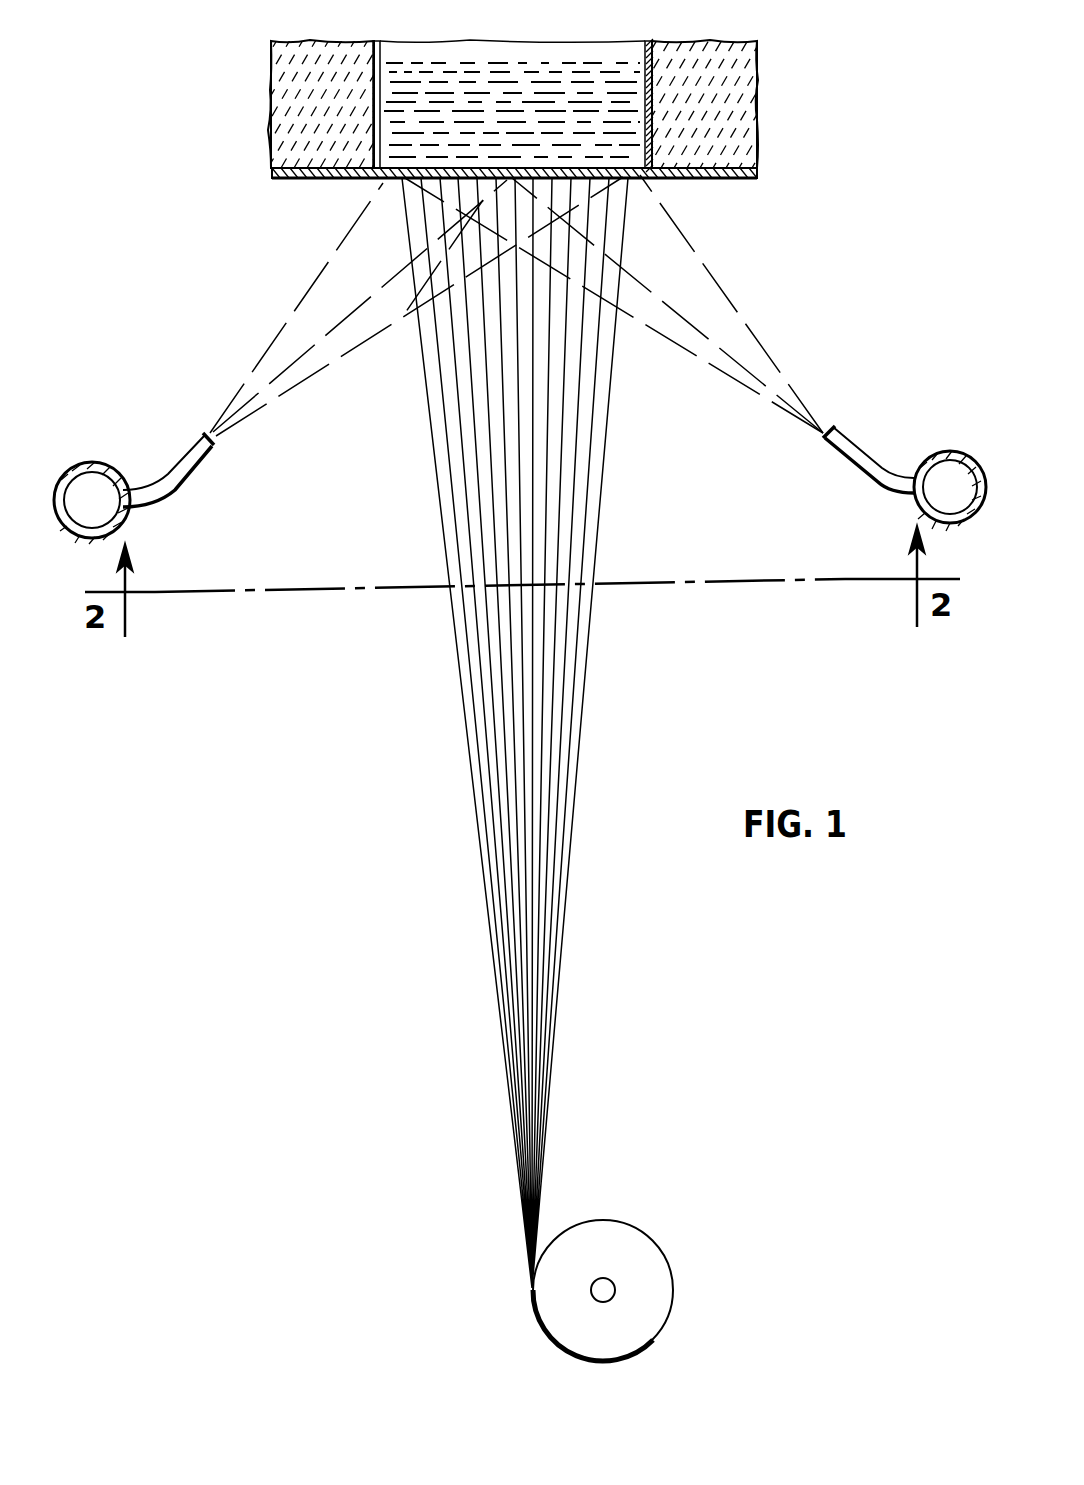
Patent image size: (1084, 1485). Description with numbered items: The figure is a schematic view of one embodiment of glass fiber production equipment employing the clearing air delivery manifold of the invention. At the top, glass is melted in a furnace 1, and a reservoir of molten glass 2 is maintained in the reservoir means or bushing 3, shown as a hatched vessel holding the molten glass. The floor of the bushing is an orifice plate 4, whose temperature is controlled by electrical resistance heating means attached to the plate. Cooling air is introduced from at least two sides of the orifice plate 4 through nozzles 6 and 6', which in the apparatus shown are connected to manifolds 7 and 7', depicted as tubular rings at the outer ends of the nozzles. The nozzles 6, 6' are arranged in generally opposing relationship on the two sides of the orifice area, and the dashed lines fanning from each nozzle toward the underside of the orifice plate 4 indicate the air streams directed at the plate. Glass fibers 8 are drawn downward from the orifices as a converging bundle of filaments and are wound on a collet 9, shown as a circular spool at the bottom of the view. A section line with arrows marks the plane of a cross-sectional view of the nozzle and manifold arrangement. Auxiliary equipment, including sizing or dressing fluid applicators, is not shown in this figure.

The furnace 1 is at (297, 75).
The molten glass 2 is at (480, 72).
The bushing 3 is at (640, 52).
The orifice plate 4 is at (403, 180).
The nozzle 6 is at (868, 443).
The nozzle 6' is at (168, 448).
The manifold 7 is at (950, 462).
The manifold 7' is at (92, 478).
The glass fibers 8 is at (463, 487).
The collet 9 is at (612, 1240).